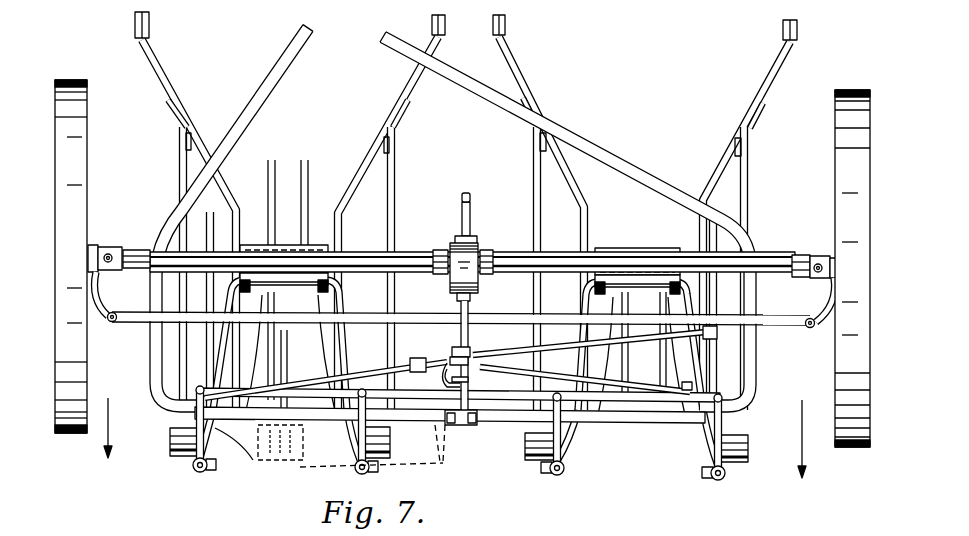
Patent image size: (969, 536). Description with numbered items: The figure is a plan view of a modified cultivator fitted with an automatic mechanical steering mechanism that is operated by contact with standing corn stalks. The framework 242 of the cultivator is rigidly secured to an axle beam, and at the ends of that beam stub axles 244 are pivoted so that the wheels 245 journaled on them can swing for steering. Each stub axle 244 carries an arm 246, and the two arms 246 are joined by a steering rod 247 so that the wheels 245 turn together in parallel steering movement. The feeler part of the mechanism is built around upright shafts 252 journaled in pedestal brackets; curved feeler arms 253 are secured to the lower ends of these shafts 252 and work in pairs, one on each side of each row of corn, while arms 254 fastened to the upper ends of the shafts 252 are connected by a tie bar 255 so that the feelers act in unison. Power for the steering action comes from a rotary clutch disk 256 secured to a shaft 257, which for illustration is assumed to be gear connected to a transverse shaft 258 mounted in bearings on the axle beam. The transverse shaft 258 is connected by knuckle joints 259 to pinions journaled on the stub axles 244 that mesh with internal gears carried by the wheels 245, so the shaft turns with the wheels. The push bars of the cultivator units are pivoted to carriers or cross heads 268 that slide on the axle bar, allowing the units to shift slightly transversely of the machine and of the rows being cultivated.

The framework 242 is at (598, 154).
The stub axle 244 is at (93, 246).
The wheel 245 is at (80, 121).
The arm 246 is at (111, 320).
The steering rod 247 is at (410, 319).
The upright shaft 252 is at (559, 477).
The feeler arm 253 is at (678, 437).
The arm 254 is at (194, 416).
The tie bar 255 is at (500, 396).
The rotary clutch disk 256 is at (414, 357).
The shaft 257 is at (469, 308).
The transverse shaft 258 is at (402, 262).
The knuckle joint 259 is at (112, 270).
The cross head 268 is at (286, 249).